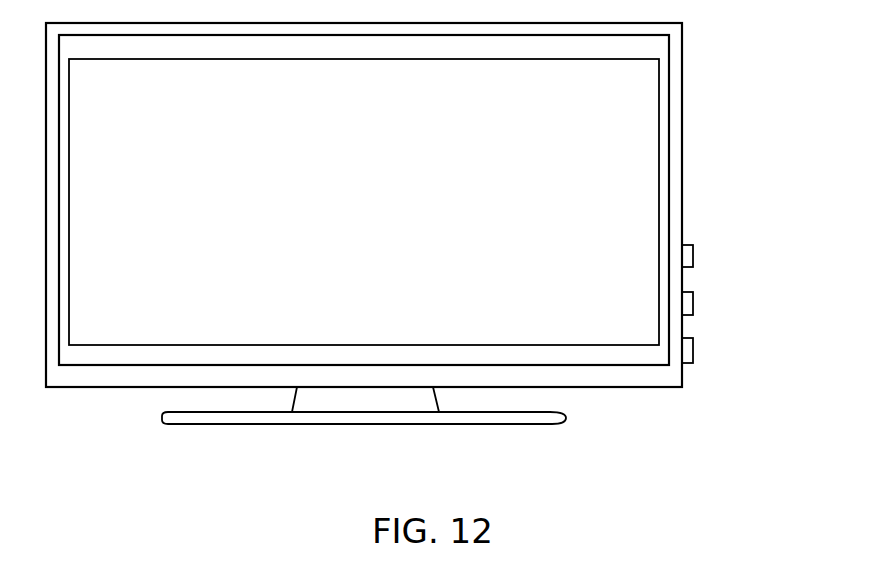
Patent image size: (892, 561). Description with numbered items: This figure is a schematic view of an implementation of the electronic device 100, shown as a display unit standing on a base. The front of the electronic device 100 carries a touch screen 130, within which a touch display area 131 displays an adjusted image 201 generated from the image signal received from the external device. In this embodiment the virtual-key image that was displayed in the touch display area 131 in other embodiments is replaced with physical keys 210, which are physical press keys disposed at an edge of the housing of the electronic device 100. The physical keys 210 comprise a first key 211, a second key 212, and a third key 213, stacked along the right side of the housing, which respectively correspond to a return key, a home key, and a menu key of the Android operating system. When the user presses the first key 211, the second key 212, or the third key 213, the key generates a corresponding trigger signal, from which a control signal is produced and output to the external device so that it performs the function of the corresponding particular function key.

The electronic device 100 is at (76, 387).
The touch screen 130 is at (140, 365).
The touch display area 131 is at (207, 360).
The adjusted image 201 is at (275, 323).
The physical keys 210 is at (775, 240).
The first key 211 is at (693, 256).
The second key 212 is at (693, 304).
The third key 213 is at (693, 350).